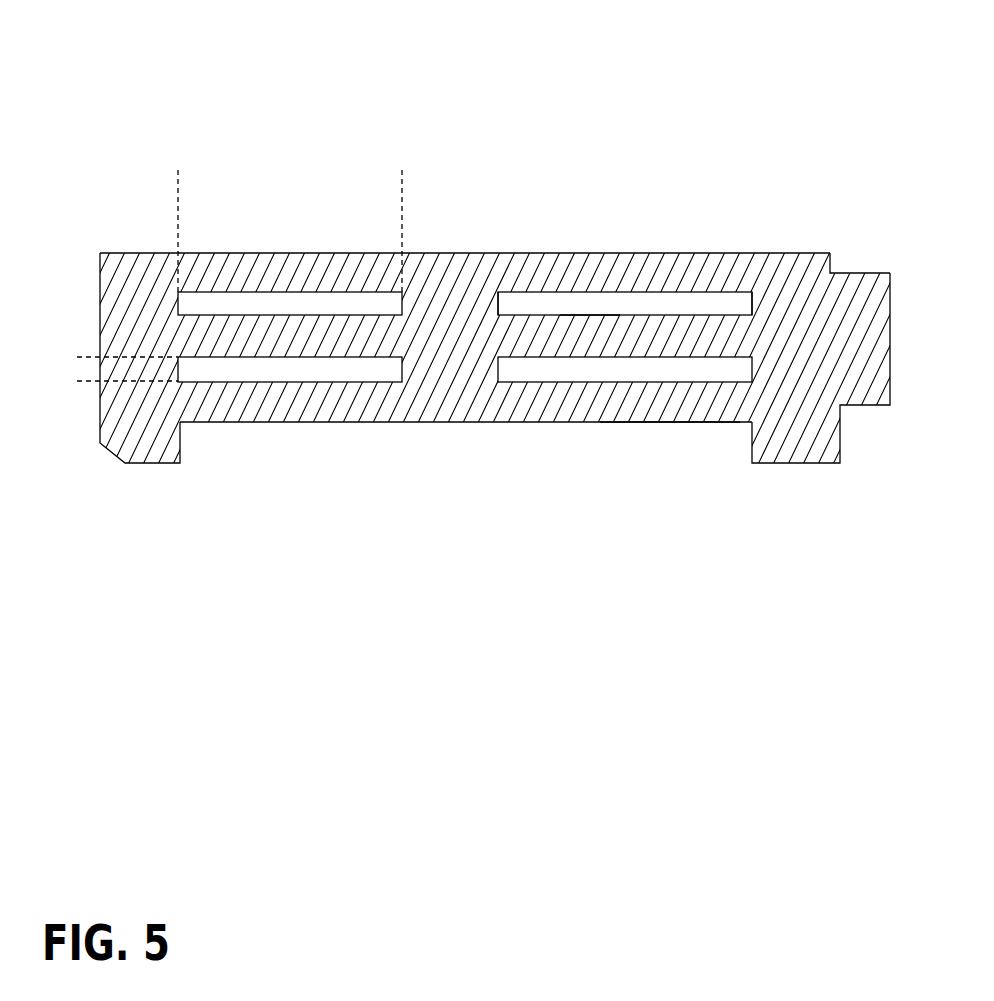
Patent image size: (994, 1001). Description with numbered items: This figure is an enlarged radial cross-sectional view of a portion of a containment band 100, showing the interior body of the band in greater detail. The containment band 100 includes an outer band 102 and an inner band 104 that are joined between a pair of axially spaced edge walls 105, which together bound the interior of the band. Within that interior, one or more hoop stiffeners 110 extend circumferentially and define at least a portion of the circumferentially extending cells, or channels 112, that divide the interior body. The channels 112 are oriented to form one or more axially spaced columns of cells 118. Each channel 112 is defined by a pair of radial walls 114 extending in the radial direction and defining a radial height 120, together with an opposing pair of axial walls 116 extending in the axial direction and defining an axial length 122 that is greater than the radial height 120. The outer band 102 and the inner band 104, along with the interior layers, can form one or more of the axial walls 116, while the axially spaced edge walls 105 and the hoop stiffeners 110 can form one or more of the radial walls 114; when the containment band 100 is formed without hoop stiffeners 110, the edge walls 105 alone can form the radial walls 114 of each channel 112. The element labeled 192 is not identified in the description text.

The containment band 100 is at (497, 274).
The outer band 102 is at (497, 316).
The inner band 104 is at (440, 423).
The axially spaced edge walls 105 is at (100, 306).
The hoop stiffener 110 is at (457, 290).
The channels 112 is at (645, 305).
The radial walls 114 is at (498, 303).
The axial walls 116 is at (613, 290).
The axially spaced columns of cells 118 is at (625, 437).
The radial height 120 is at (78, 357).
The axial length 122 is at (402, 170).
The step 192 is at (873, 303).